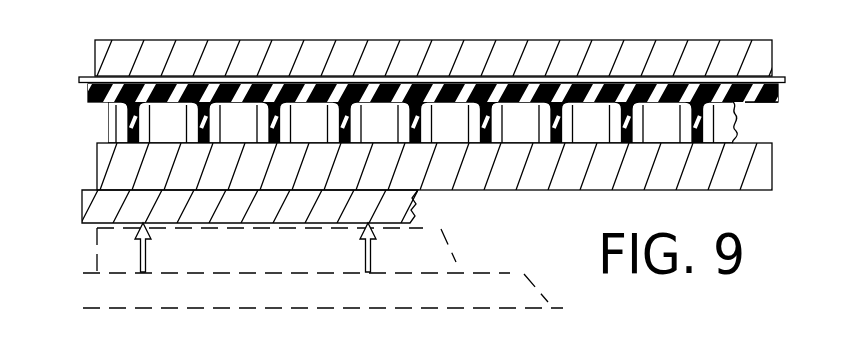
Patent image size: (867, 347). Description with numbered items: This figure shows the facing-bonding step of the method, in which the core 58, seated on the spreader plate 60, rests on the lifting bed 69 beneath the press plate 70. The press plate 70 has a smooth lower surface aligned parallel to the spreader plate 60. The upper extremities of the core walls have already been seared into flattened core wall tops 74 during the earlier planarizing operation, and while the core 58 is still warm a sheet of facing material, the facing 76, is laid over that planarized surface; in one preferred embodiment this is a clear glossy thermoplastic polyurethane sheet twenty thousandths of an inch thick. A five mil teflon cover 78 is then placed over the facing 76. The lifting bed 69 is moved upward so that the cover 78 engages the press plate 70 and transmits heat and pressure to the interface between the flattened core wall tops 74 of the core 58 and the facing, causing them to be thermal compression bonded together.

The press plate 70 is at (95, 50).
The teflon cover 78 is at (785, 82).
The flattened core wall tops 74 is at (108, 110).
The core 58 is at (108, 131).
The facing sheet 76 is at (777, 102).
The spreader plate 60 is at (477, 170).
The lifting bed 69 is at (83, 289).